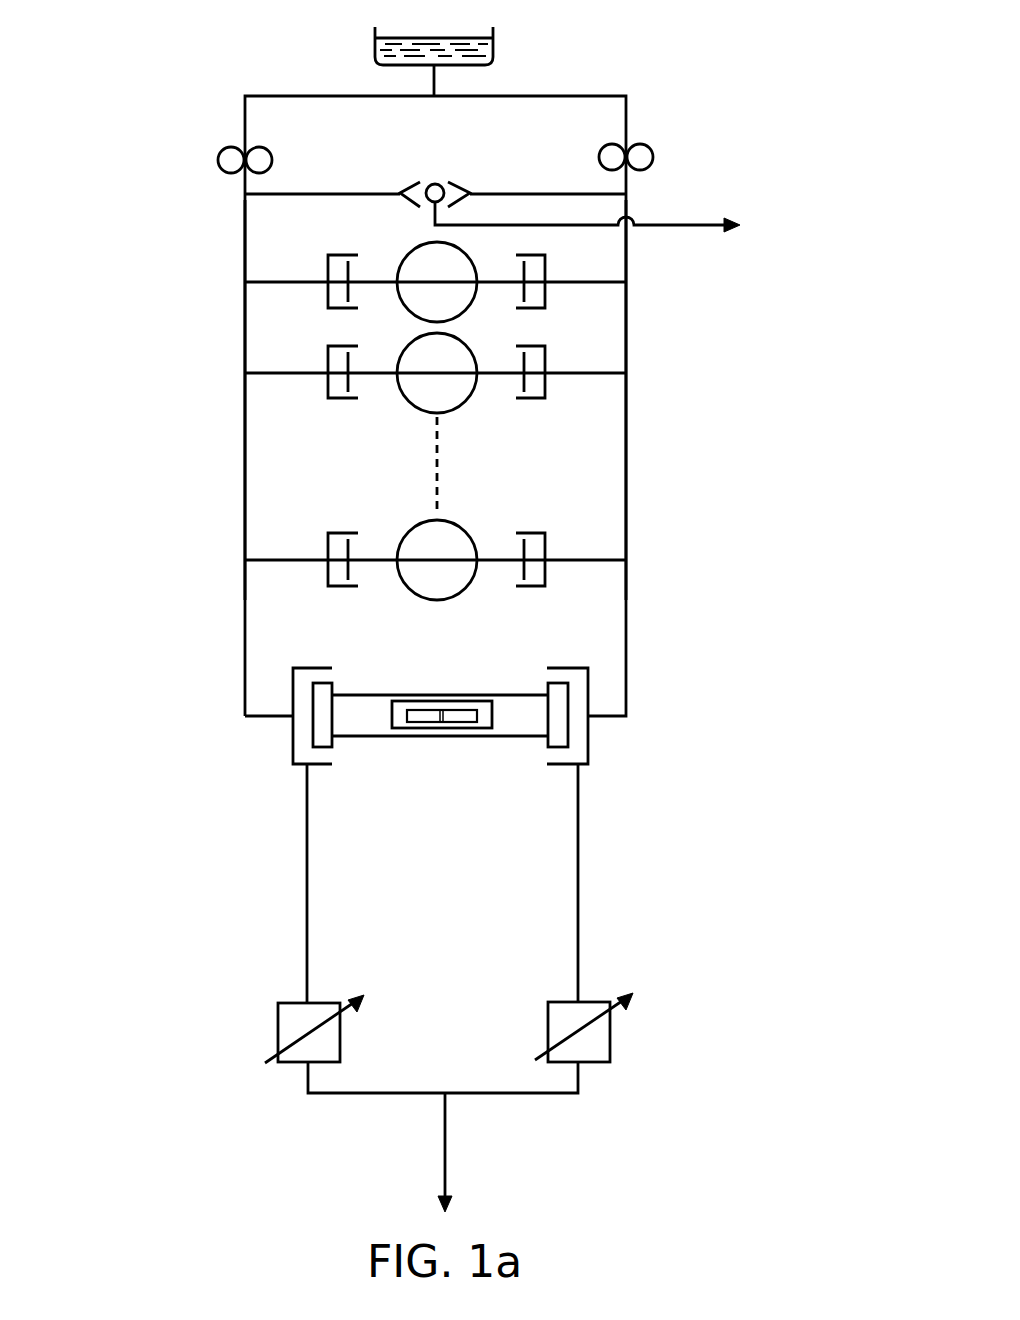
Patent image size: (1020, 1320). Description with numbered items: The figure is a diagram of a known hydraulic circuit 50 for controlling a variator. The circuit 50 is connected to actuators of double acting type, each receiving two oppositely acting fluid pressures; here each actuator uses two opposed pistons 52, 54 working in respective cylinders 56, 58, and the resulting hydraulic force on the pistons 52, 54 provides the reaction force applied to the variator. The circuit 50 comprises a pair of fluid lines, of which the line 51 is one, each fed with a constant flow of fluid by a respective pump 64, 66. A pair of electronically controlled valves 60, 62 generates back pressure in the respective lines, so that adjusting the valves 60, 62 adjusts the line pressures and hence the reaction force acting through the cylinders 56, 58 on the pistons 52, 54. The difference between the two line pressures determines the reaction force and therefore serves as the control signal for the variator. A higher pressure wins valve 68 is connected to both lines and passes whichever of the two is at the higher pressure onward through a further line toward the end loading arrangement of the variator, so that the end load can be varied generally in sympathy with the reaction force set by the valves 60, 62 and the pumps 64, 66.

The hydraulic circuit 50 is at (645, 85).
The first chamber 51 is at (229, 505).
The piston 52 is at (342, 270).
The piston 54 is at (540, 272).
The cylinder 56 is at (327, 305).
The cylinder 58 is at (548, 297).
The electronically controlled valve 60 is at (278, 1020).
The electronically controlled valve 62 is at (610, 1045).
The pump 64 is at (218, 160).
The pump 66 is at (655, 160).
The higher pressure wins valve 68 is at (453, 185).